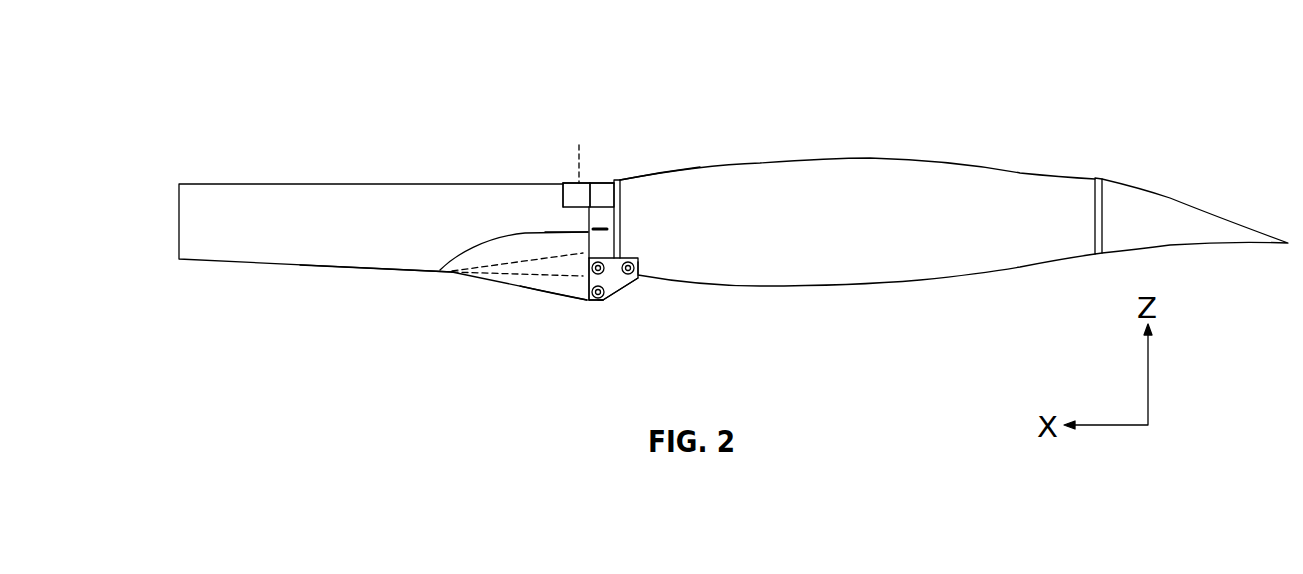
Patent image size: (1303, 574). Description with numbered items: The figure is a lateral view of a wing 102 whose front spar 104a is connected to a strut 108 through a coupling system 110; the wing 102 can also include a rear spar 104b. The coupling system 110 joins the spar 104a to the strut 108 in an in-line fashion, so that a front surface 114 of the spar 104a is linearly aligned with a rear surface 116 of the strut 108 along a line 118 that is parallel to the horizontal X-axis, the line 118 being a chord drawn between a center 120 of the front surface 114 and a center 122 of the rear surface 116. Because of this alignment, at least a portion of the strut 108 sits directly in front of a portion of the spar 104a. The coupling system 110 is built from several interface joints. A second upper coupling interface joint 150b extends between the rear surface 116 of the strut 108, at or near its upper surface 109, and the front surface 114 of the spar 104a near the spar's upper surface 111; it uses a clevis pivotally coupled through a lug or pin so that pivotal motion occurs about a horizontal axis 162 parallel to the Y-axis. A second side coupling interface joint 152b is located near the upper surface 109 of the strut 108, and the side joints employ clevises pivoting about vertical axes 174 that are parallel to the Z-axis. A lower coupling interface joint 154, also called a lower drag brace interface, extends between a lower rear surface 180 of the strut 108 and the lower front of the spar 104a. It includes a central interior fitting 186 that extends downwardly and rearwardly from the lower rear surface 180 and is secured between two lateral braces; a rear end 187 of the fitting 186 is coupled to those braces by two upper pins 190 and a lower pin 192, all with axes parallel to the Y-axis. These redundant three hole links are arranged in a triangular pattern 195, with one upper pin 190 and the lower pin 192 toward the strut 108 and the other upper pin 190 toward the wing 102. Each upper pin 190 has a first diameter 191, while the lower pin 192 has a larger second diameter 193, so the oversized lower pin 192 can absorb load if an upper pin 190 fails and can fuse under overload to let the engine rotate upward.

The wing 102 is at (954, 198).
The spar 104a is at (740, 173).
The spar 104b is at (1170, 208).
The strut 108 is at (368, 184).
The upper surface 109 is at (557, 183).
The coupling system 110 is at (588, 150).
The upper surface 111 is at (648, 172).
The front surface 114 is at (622, 227).
The rear surface 116 is at (440, 270).
The line 118 is at (623, 181).
The center 120 is at (622, 231).
The center 122 is at (575, 232).
The second upper coupling interface joint 150b is at (617, 181).
The second side coupling interface joint 152b is at (604, 194).
The lower coupling interface joint 154 is at (598, 308).
The axis 162 is at (569, 183).
The axes 174 is at (583, 179).
The lower rear surface 180 is at (355, 272).
The central interior fitting 186 is at (530, 287).
The rear end 187 is at (587, 305).
The upper pins 190 is at (605, 270).
The first diameter 191 is at (630, 260).
The lower pin 192 is at (604, 293).
The second diameter 193 is at (586, 283).
The triangular pattern 195 is at (655, 268).